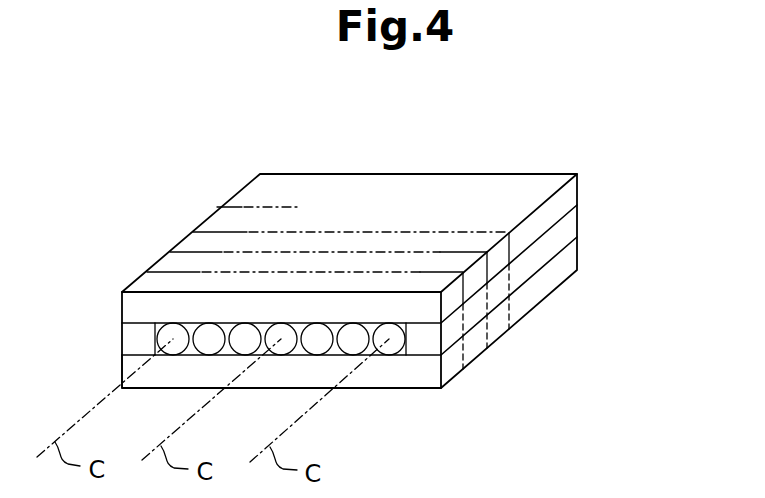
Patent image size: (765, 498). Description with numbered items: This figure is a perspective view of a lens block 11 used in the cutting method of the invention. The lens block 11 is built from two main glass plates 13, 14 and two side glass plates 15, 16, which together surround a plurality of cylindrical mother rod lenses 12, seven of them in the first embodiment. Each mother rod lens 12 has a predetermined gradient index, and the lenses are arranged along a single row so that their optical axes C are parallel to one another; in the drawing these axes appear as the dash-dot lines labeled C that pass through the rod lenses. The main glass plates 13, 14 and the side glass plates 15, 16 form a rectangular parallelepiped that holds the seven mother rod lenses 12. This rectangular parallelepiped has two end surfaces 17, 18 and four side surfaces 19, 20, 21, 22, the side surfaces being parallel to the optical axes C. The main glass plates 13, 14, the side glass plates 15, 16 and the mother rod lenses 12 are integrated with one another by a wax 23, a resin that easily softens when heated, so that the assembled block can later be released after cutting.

The lens block 11 is at (569, 162).
The mother rod lenses 12 is at (174, 352).
The main glass plate 13 is at (430, 173).
The main glass plate 14 is at (242, 388).
The side glass plate 15 is at (433, 343).
The side glass plate 16 is at (128, 342).
The end surface 17 is at (122, 298).
The end surface 18 is at (287, 171).
The side surface 19 is at (258, 178).
The side surface 20 is at (577, 227).
The side surface 21 is at (133, 388).
The side surface 22 is at (157, 256).
The wax 23 is at (337, 357).